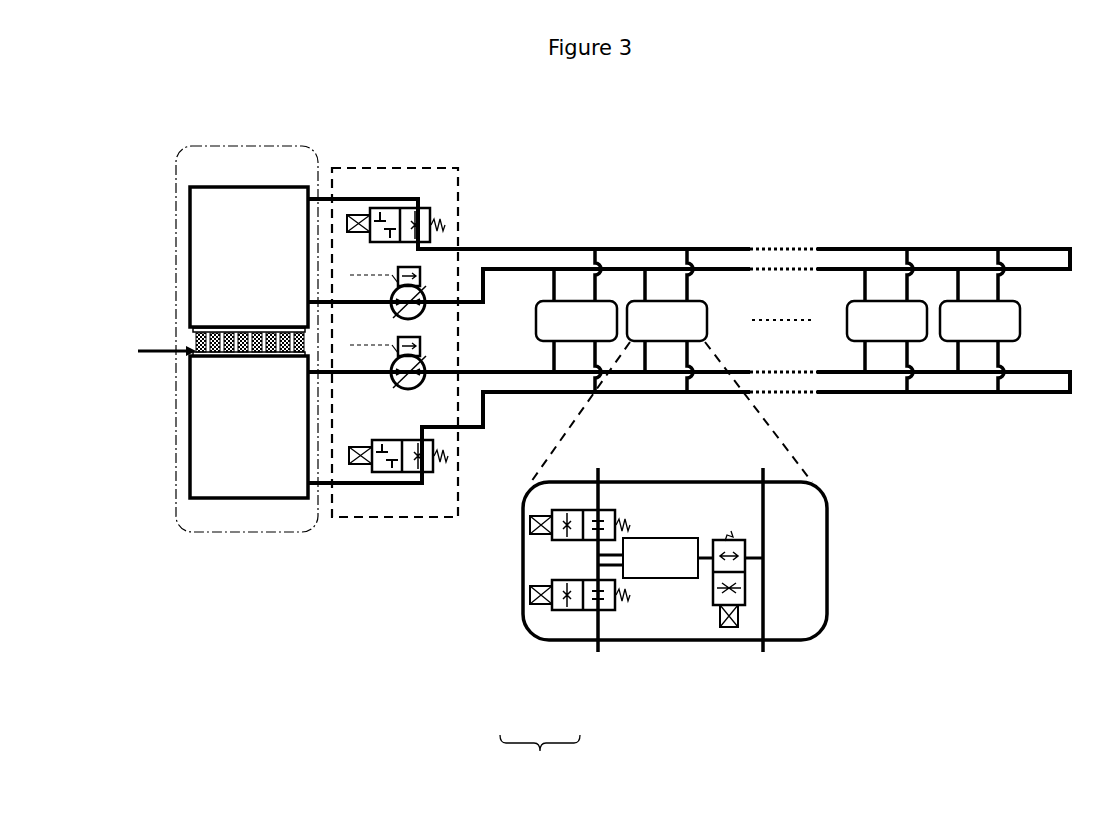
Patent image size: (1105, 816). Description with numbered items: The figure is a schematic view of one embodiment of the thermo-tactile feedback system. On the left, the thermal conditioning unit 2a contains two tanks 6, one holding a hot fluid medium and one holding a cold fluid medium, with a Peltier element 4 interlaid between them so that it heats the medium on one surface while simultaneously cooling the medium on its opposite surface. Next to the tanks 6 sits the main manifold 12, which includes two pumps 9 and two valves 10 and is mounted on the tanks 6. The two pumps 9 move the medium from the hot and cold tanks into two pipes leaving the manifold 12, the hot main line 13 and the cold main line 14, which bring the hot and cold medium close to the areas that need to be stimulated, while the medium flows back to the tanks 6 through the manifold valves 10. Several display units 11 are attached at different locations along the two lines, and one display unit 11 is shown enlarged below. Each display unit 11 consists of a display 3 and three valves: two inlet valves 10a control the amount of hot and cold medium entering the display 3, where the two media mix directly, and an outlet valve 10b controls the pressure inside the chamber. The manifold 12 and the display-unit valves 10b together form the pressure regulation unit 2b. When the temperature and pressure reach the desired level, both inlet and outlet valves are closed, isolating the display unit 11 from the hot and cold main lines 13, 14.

The thermal conditioning unit 2a is at (250, 146).
The pressure regulation unit 2b is at (540, 760).
The display 3 is at (663, 538).
The Peltier element 4 is at (186, 352).
The tanks 6 is at (186, 260).
The pumps 9 is at (427, 287).
The valves 10 is at (421, 206).
The inlet valves 10a is at (557, 580).
The outlet valve 10b is at (713, 592).
The display unit 11 is at (697, 300).
The main manifold 12 is at (395, 518).
The hot main line 13 is at (837, 249).
The cold main line 14 is at (943, 393).